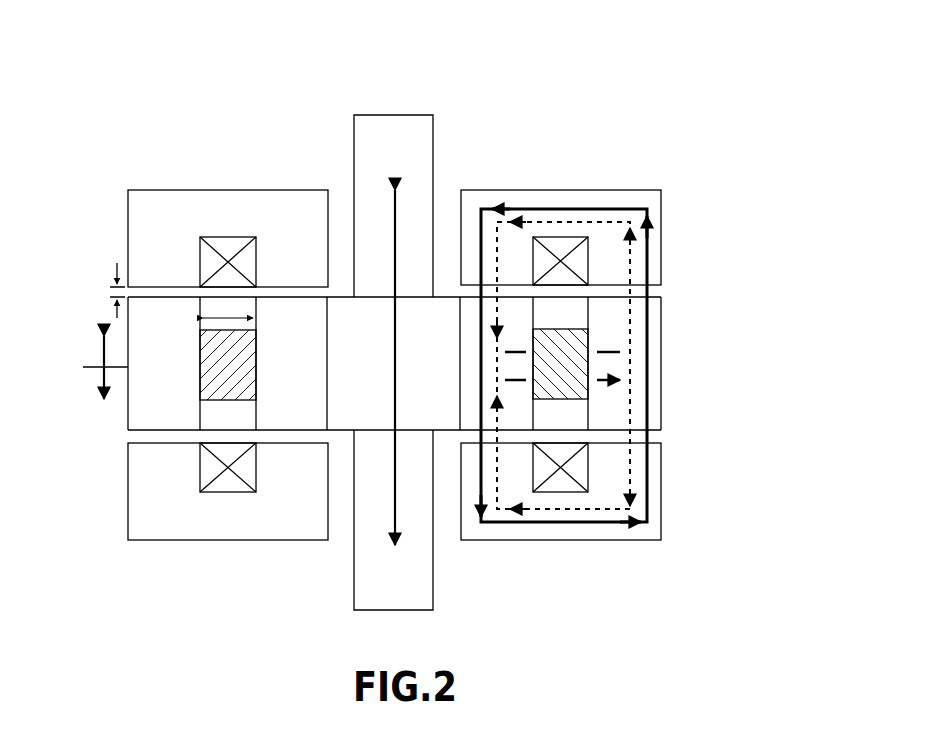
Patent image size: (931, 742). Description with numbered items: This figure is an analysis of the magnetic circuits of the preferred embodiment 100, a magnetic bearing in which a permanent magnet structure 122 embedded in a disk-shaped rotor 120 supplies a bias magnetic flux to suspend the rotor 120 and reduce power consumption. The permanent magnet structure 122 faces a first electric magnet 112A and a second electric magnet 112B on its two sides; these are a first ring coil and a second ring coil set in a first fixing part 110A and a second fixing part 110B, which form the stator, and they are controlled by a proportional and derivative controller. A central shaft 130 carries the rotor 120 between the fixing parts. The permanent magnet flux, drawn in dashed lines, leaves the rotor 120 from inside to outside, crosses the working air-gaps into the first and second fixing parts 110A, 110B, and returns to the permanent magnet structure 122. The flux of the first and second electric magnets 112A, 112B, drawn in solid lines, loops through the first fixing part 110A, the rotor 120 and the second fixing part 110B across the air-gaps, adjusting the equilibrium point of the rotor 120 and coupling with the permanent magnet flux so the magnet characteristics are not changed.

The preferred embodiment 100 is at (124, 163).
The first fixing part 110A is at (657, 243).
The second fixing part 110B is at (657, 497).
The first electric magnet 112A is at (560, 245).
The second electric magnet 112B is at (560, 482).
The rotor 120 is at (655, 340).
The permanent magnet structure 122 is at (573, 398).
The shaft 130 is at (367, 568).